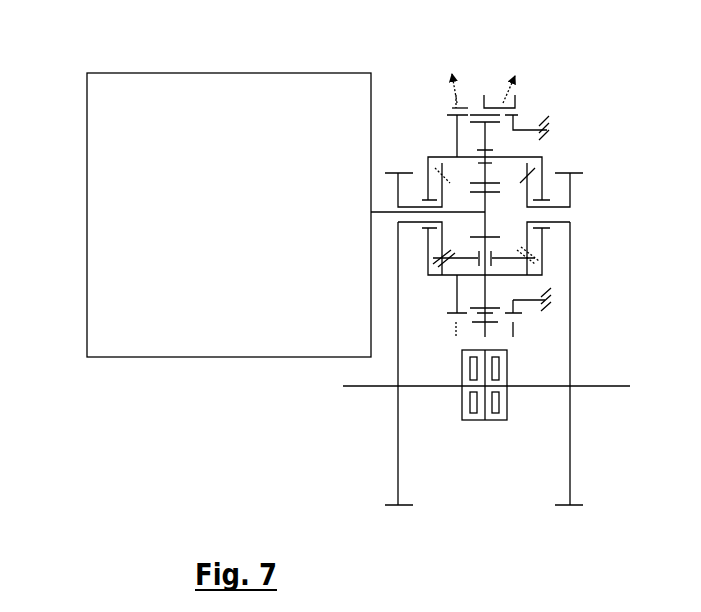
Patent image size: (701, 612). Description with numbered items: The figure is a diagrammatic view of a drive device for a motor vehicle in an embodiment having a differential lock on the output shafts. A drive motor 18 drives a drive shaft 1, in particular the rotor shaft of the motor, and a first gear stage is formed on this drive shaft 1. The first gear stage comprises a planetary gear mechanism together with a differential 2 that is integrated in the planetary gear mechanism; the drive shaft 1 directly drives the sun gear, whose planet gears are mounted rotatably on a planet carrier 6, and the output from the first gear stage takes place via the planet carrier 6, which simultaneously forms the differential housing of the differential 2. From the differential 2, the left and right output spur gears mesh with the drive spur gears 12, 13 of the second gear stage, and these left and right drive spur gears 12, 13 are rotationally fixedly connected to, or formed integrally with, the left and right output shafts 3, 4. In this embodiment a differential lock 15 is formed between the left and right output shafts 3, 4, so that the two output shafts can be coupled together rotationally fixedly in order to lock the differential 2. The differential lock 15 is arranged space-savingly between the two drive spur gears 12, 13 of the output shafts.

The drive motor 18 is at (229, 215).
The drive shaft 1 is at (377, 208).
The planet carrier 6 is at (432, 153).
The differential 2 is at (548, 277).
The left output shaft 3 is at (342, 392).
The right output shaft 4 is at (631, 392).
The left drive spur gear 12 is at (395, 481).
The right drive spur gear 13 is at (574, 488).
The differential lock 15 is at (463, 428).